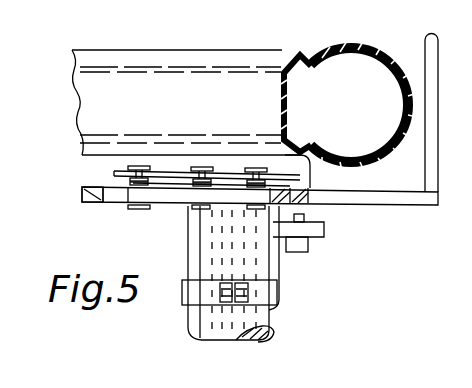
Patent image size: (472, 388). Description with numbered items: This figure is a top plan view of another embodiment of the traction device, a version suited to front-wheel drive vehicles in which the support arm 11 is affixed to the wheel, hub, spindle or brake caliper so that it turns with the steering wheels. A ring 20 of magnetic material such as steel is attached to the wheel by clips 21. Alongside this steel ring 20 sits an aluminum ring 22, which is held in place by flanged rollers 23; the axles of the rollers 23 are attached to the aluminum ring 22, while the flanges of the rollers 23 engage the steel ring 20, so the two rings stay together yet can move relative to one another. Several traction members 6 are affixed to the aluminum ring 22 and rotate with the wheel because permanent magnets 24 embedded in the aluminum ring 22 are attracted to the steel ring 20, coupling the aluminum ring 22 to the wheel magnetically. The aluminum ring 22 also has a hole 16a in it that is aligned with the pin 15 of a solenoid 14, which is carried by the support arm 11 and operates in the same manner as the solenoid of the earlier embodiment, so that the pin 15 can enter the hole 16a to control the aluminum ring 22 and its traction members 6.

The traction member 6 is at (439, 97).
The support arm 11 is at (280, 292).
The solenoid 14 is at (296, 254).
The pin 15 is at (296, 215).
The hole 16a is at (100, 185).
The ring 20 is at (172, 172).
The clip 21 is at (313, 167).
The aluminum ring 22 is at (169, 202).
The flanged roller 23 is at (140, 165).
The permanent magnet 24 is at (285, 187).